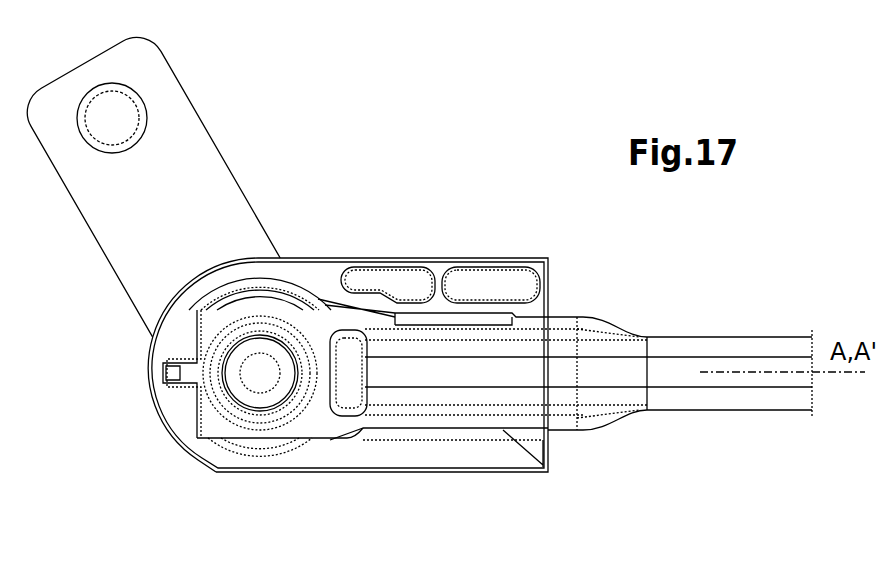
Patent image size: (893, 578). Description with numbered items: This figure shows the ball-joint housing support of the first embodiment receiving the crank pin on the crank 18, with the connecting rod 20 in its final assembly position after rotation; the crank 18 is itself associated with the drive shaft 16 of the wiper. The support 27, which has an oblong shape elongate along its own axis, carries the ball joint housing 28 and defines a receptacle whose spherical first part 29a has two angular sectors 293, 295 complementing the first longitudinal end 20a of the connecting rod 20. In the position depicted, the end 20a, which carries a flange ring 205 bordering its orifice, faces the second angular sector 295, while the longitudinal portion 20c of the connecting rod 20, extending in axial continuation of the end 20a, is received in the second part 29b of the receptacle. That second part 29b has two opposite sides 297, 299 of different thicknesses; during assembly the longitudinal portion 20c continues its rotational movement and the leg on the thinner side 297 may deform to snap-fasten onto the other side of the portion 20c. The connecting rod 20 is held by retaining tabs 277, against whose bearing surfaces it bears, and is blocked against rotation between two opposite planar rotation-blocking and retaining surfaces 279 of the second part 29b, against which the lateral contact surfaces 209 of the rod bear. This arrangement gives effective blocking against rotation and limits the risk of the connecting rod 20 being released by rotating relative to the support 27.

The drive shaft 16 is at (104, 85).
The crank 18 is at (100, 222).
The connecting rod 20 is at (743, 332).
The first longitudinal end 20a is at (218, 270).
The longitudinal portion 20c is at (525, 347).
The support 27 is at (418, 228).
The ball joint housing 28 is at (252, 402).
The first part of the receptacle 29a is at (259, 450).
The second part of the receptacle 29b is at (487, 448).
The flange ring 205 is at (317, 405).
The lateral contact surfaces 209 is at (550, 440).
The retaining tab 277 is at (467, 312).
The rotation-blocking and retaining surfaces 279 is at (548, 325).
The first angular sector 293 is at (250, 290).
The second angular sector 295 is at (150, 395).
The smallest-thickness side 297 is at (385, 478).
The opposite side 299 is at (368, 262).